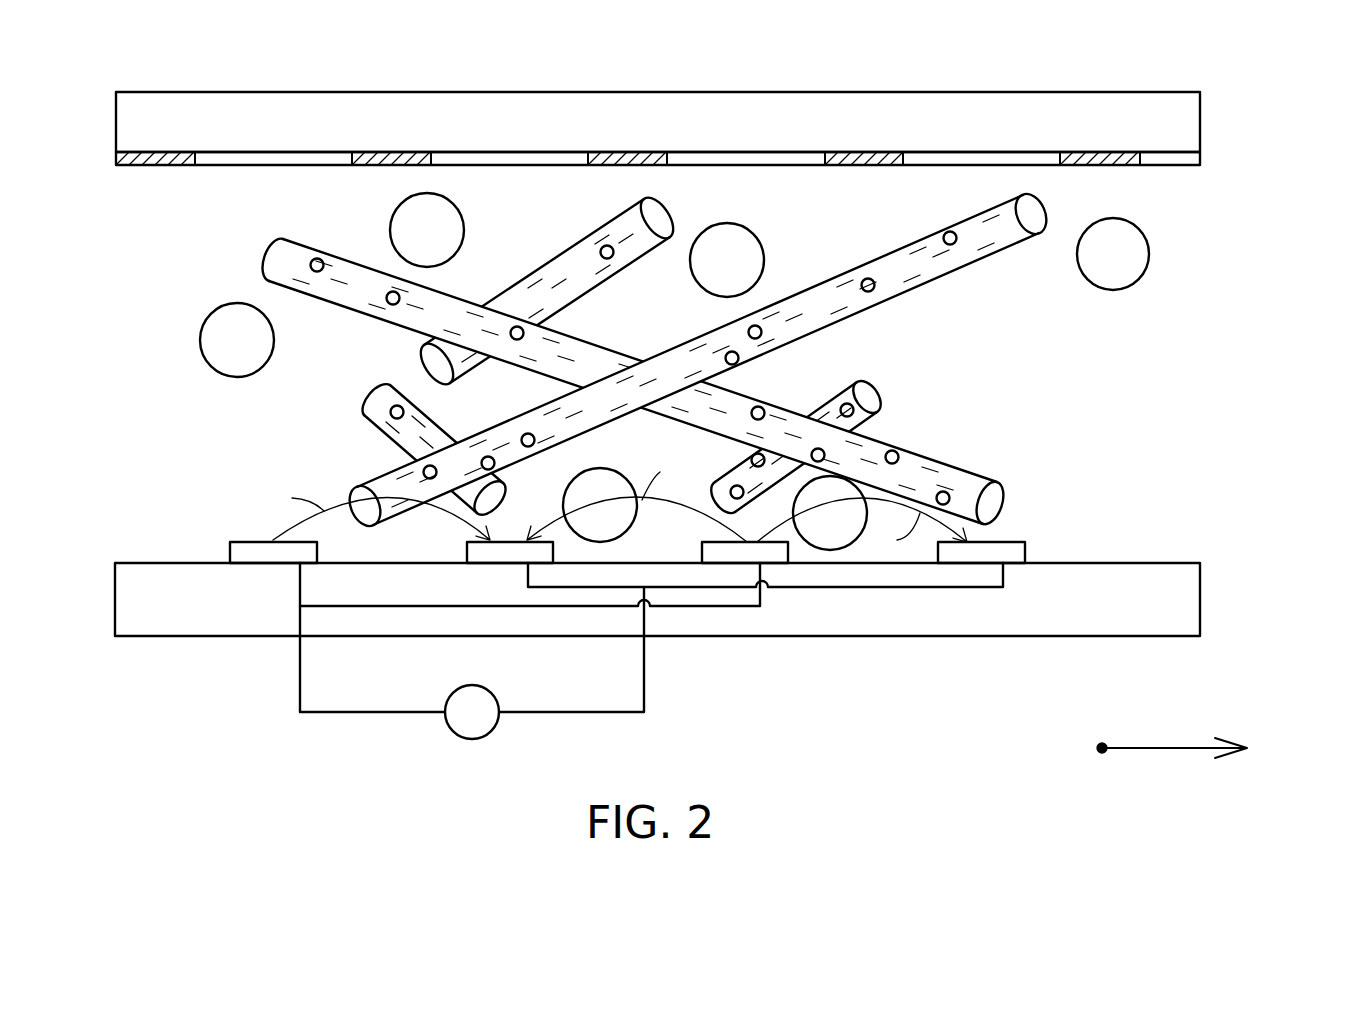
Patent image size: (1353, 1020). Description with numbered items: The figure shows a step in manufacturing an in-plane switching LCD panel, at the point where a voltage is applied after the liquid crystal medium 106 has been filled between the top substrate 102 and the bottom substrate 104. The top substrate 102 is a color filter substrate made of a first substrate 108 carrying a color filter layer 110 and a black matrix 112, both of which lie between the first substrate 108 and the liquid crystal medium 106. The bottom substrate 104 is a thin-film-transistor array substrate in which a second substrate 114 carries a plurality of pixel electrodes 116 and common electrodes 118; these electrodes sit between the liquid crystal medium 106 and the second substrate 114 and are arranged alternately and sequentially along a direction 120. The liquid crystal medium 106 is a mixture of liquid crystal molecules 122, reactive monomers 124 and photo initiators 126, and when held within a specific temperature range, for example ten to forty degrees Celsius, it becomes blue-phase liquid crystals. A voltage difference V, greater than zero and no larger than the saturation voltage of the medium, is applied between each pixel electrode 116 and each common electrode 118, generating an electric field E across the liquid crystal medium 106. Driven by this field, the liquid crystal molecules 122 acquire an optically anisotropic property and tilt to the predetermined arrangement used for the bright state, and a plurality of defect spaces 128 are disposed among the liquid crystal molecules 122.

The top substrate 102 is at (694, 160).
The bottom substrate 104 is at (721, 640).
The liquid crystal medium 106 is at (764, 298).
The first substrate 108 is at (990, 133).
The color filter layer 110 is at (222, 158).
The black matrix 112 is at (118, 163).
The second substrate 114 is at (1125, 615).
The pixel electrodes 116 is at (270, 548).
The common electrodes 118 is at (511, 550).
The direction 120 is at (1172, 733).
The liquid crystal molecules 122 is at (738, 245).
The reactive monomers 124 is at (547, 215).
The photo initiators 126 is at (606, 251).
The defect spaces 128 is at (636, 284).